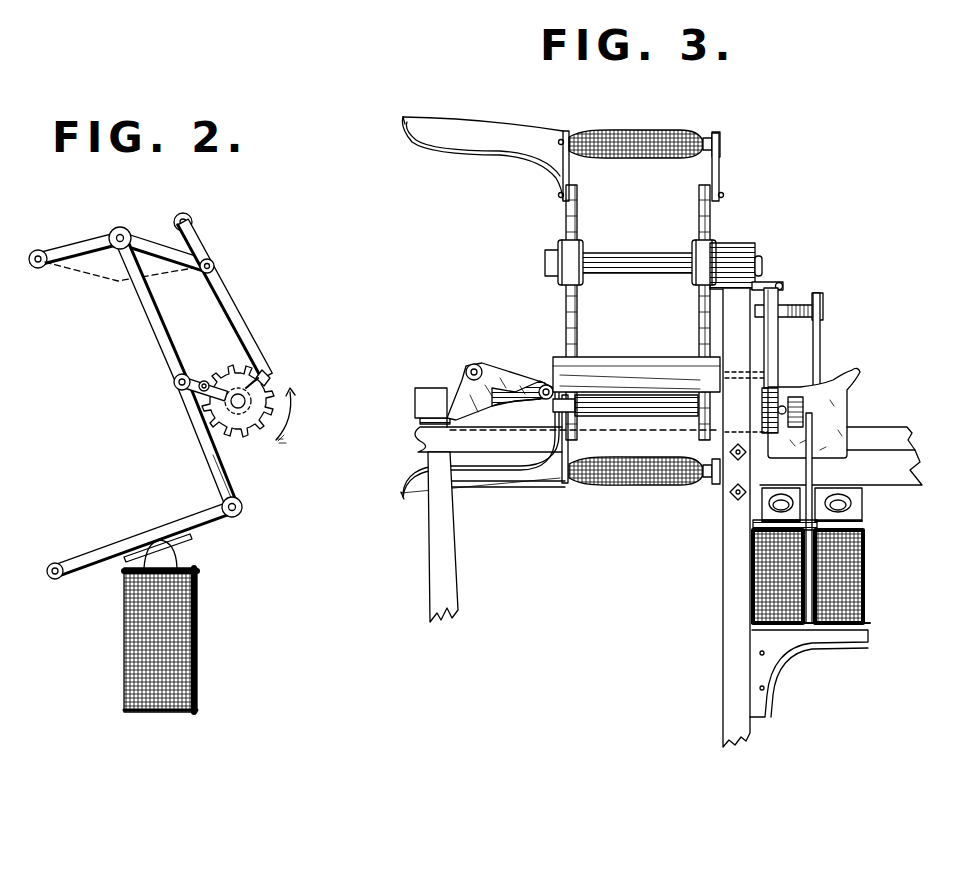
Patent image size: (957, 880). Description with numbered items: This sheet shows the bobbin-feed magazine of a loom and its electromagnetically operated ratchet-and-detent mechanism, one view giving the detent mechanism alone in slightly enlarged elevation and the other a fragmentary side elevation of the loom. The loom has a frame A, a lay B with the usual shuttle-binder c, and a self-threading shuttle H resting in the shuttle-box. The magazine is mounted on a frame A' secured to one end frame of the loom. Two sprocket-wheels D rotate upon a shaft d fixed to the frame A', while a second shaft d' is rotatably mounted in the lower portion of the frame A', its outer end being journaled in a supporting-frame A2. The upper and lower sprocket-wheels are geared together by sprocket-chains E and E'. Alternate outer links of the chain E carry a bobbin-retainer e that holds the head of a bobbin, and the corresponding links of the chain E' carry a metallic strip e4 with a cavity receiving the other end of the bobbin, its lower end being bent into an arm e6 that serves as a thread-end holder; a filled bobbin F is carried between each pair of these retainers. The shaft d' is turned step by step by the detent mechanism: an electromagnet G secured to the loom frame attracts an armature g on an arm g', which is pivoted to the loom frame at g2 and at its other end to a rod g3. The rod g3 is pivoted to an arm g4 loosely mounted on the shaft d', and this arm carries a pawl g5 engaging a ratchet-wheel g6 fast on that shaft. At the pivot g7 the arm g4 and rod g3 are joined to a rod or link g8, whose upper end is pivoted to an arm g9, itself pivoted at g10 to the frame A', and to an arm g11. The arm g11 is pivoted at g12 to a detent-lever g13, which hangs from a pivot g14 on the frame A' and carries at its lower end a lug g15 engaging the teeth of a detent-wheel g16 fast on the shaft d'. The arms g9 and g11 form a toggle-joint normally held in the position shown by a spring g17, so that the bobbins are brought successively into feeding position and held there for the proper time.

In FIG. 2, the armature g is at (176, 550).
In FIG. 2, the arm g' is at (147, 537).
In FIG. 3, the arm g' is at (810, 495).
In FIG. 2, the pivot g2 is at (60, 580).
In FIG. 3, the pivot g2 is at (787, 522).
In FIG. 2, the rod g3 is at (232, 483).
In FIG. 3, the rod g3 is at (807, 448).
In FIG. 2, the arm g4 is at (205, 380).
In FIG. 2, the pawl g5 is at (208, 380).
In FIG. 2, the ratchet-wheel g6 is at (213, 410).
In FIG. 3, the ratchet-wheel g6 is at (762, 386).
In FIG. 2, the pivot g7 is at (175, 387).
In FIG. 2, the rod or link g8 is at (155, 323).
In FIG. 3, the rod or link g8 is at (818, 360).
In FIG. 2, the arm g9 is at (67, 252).
In FIG. 3, the arm g9 is at (798, 292).
In FIG. 2, the pivot g10 is at (40, 268).
In FIG. 2, the arm g11 is at (143, 243).
In FIG. 3, the arm g11 is at (823, 307).
In FIG. 2, the pivot g12 is at (212, 267).
In FIG. 2, the detent-lever g13 is at (235, 307).
In FIG. 3, the detent-lever g13 is at (770, 338).
In FIG. 2, the pivot g14 is at (192, 220).
In FIG. 2, the lug g15 is at (267, 374).
In FIG. 2, the detent-wheel g16 is at (250, 372).
In FIG. 3, the spring g17 is at (781, 287).
In FIG. 2, the second shaft d' is at (270, 400).
In FIG. 3, the second shaft d' is at (625, 374).
In FIG. 2, the electromagnet G is at (200, 654).
In FIG. 3, the electromagnet G is at (863, 577).
In FIG. 3, the filled bobbin F is at (653, 132).
In FIG. 3, the bobbin-retainer e is at (719, 165).
In FIG. 3, the metallic strip e4 is at (566, 181).
In FIG. 3, the arm e6 is at (491, 158).
In FIG. 3, the sprocket-chain E is at (686, 312).
In FIG. 3, the sprocket-chain E' is at (551, 312).
In FIG. 3, the shaft d is at (627, 254).
In FIG. 3, the sprocket-wheels D is at (558, 283).
In FIG. 3, the loom frame A is at (727, 518).
In FIG. 3, the frame A' is at (757, 266).
In FIG. 3, the supporting-frame A2 is at (592, 354).
In FIG. 3, the lay B is at (868, 443).
In FIG. 3, the self-threading shuttle H is at (500, 385).
In FIG. 3, the shuttle-binder c is at (512, 387).